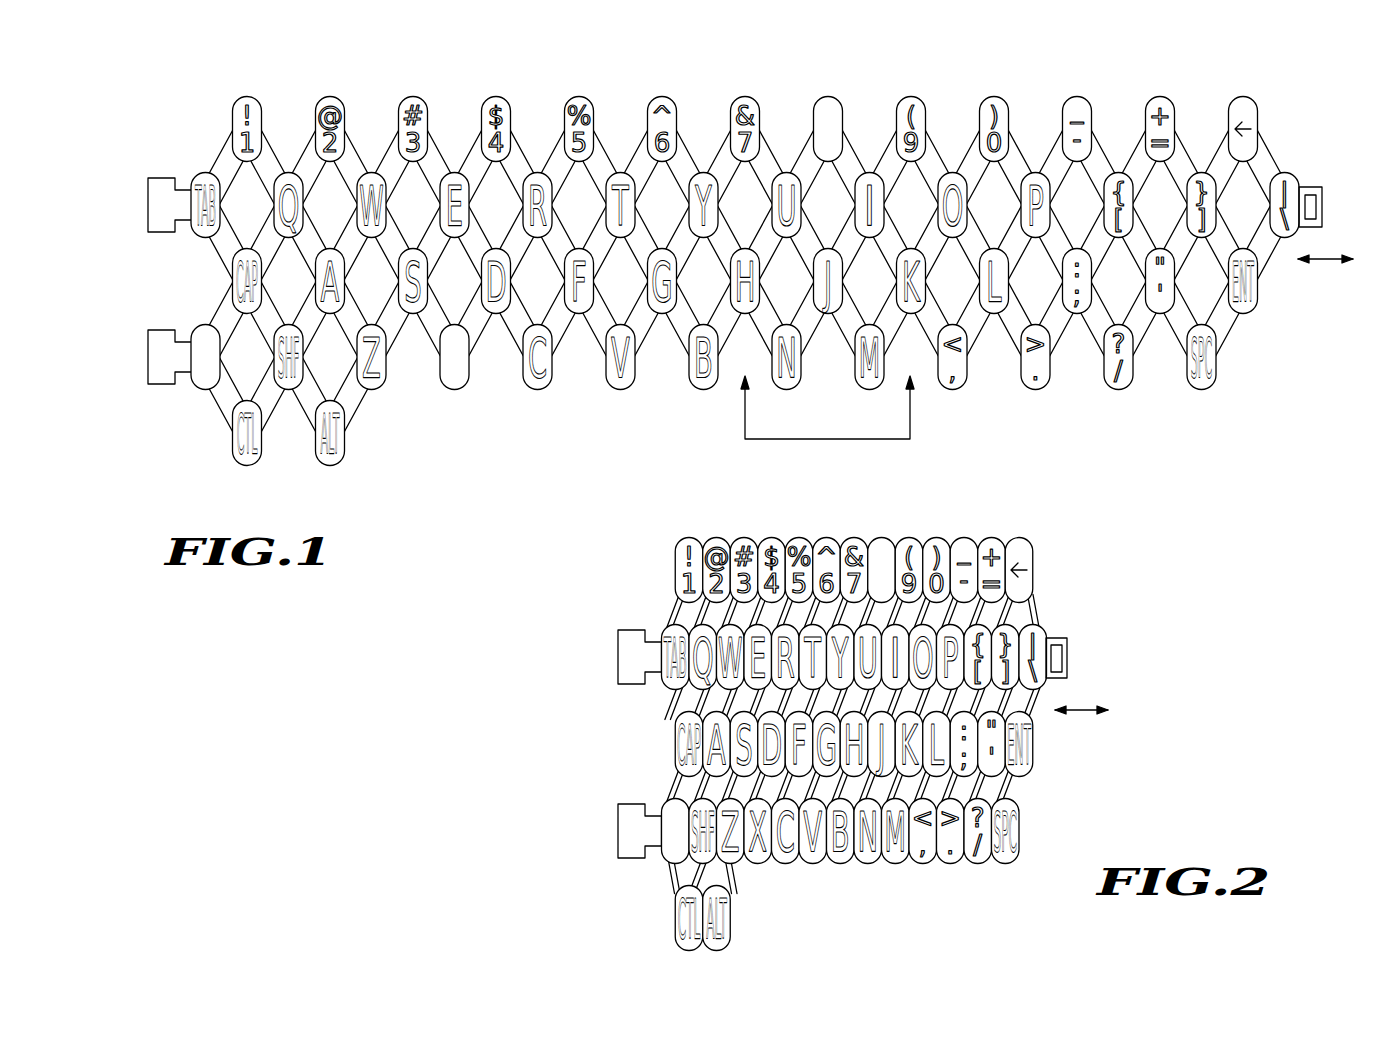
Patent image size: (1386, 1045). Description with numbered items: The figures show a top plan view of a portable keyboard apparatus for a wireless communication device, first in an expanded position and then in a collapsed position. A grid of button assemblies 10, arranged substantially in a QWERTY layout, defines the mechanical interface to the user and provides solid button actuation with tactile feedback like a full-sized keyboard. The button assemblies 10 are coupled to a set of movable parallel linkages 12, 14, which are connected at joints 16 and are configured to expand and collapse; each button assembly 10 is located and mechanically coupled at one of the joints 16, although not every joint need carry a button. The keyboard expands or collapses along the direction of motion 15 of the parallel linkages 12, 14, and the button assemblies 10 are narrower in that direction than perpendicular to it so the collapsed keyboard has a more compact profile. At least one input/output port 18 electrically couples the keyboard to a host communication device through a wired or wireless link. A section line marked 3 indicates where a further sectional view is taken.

In FIG. 1, the button assembly 10 is at (828, 97).
In FIG. 2, the button assembly 10 is at (881, 538).
In FIG. 1, the parallel linkage 12 is at (638, 158).
In FIG. 1, the parallel linkage 14 is at (687, 157).
In FIG. 1, the joint 16 is at (538, 118).
In FIG. 2, the joint 16 is at (853, 744).
In FIG. 1, the input/output port 18 is at (148, 205).
In FIG. 2, the input/output port 18 is at (618, 657).
In FIG. 1, the motion 15 is at (1339, 260).
In FIG. 2, the motion 15 is at (1095, 713).
In FIG. 1, the section line 3 is at (828, 397).